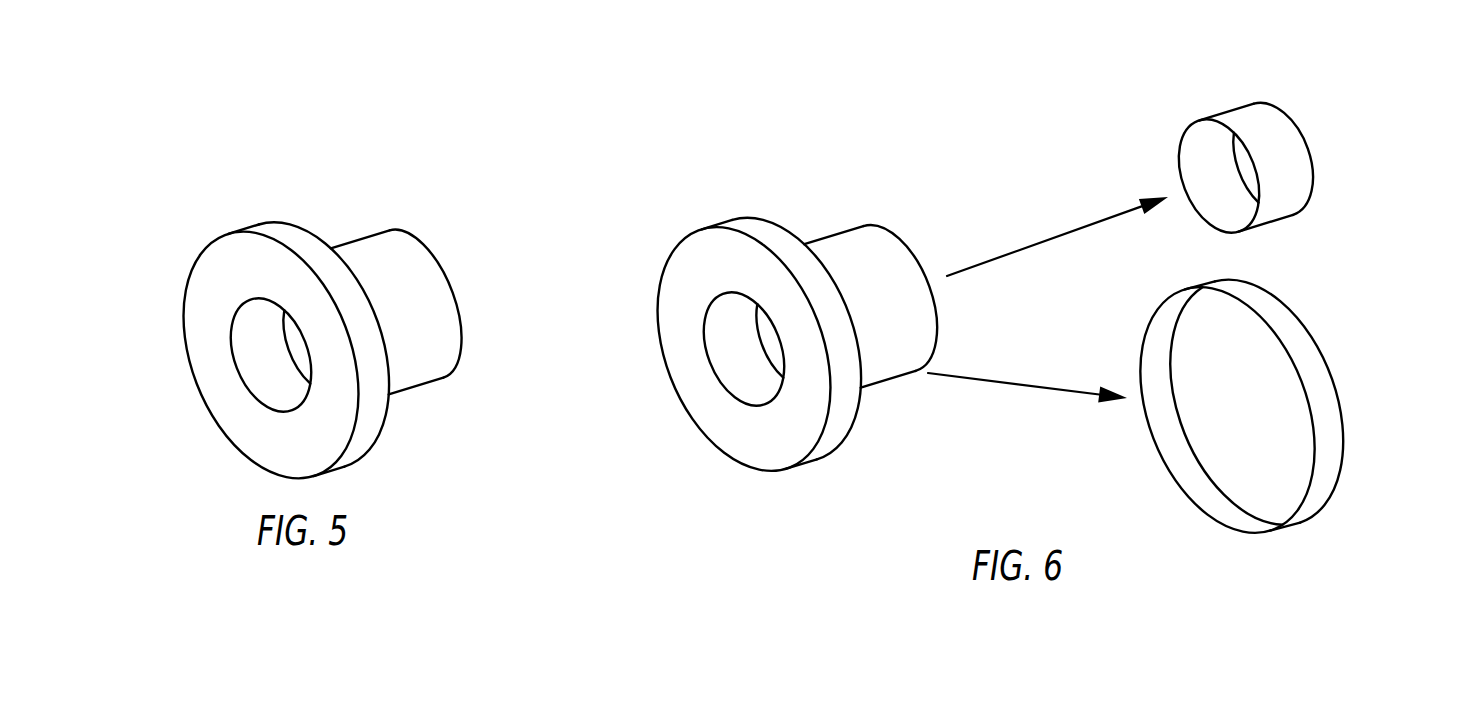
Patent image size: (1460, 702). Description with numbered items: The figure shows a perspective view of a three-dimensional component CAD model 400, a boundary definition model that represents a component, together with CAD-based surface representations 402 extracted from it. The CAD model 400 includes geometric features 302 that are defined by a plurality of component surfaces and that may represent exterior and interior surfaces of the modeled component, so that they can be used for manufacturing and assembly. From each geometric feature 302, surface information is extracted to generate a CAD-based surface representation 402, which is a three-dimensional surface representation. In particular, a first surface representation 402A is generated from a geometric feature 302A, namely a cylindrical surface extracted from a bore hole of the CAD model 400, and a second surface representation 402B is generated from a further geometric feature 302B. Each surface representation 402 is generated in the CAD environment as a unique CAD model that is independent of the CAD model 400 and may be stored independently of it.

In FIG. 5, the three-dimensional component CAD model 400 is at (423, 194).
In FIG. 6, the three-dimensional component CAD model 400 is at (1014, 298).
In FIG. 5, the geometric feature 302 is at (298, 233).
In FIG. 6, the geometric feature 302A is at (723, 355).
In FIG. 6, the geometric feature 302B is at (840, 422).
In FIG. 6, the CAD-based surface representation 402 is at (1363, 141).
In FIG. 6, the first surface representation 402A is at (1245, 118).
In FIG. 6, the second surface representation 402B is at (1287, 320).